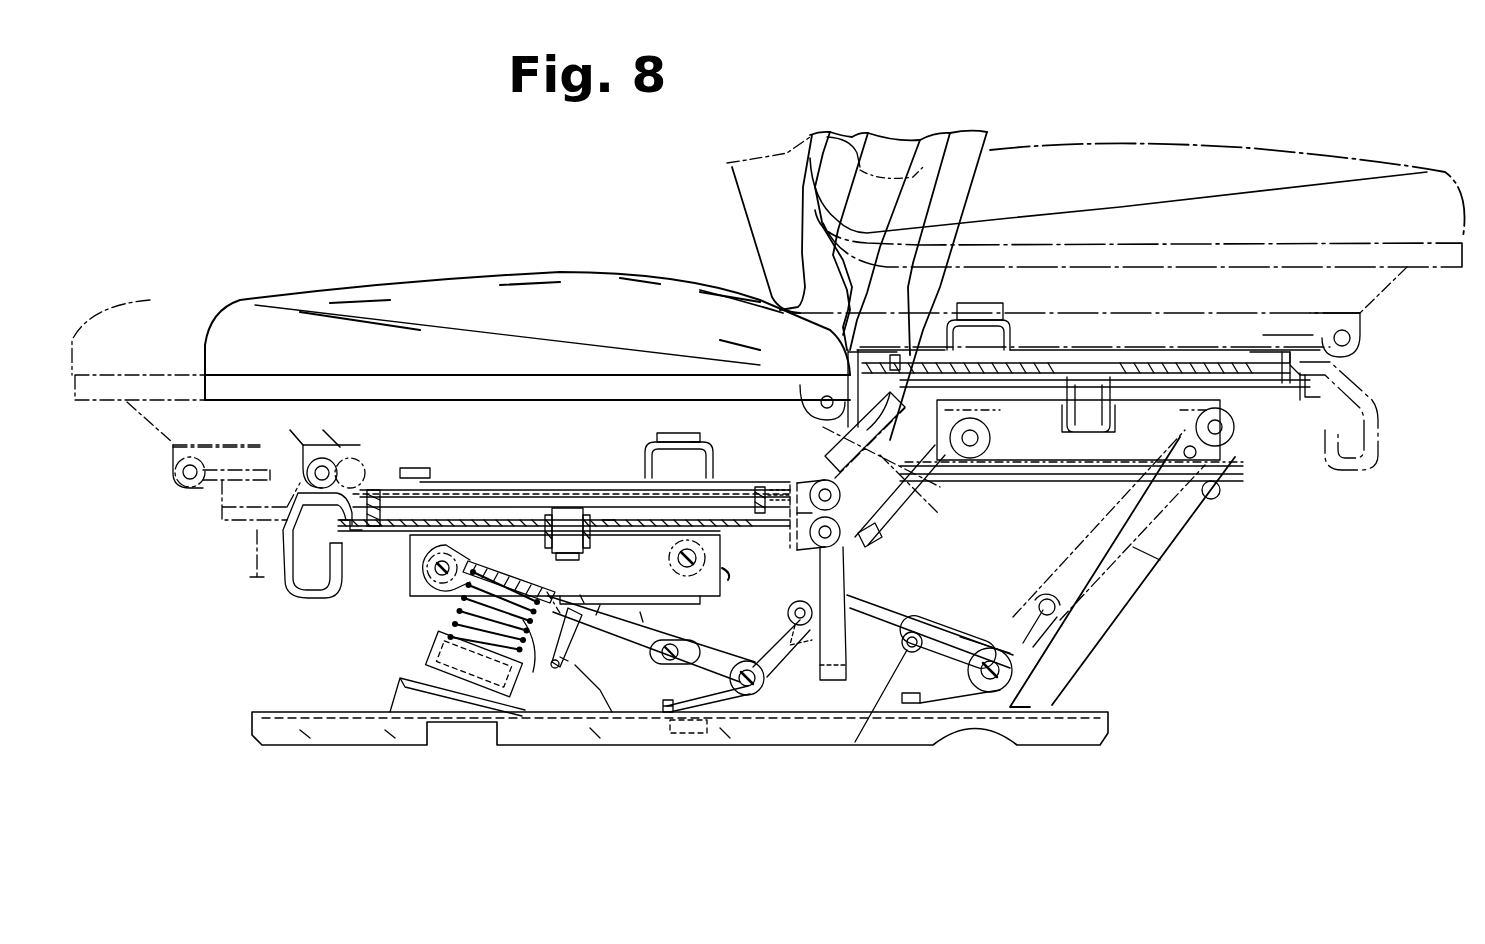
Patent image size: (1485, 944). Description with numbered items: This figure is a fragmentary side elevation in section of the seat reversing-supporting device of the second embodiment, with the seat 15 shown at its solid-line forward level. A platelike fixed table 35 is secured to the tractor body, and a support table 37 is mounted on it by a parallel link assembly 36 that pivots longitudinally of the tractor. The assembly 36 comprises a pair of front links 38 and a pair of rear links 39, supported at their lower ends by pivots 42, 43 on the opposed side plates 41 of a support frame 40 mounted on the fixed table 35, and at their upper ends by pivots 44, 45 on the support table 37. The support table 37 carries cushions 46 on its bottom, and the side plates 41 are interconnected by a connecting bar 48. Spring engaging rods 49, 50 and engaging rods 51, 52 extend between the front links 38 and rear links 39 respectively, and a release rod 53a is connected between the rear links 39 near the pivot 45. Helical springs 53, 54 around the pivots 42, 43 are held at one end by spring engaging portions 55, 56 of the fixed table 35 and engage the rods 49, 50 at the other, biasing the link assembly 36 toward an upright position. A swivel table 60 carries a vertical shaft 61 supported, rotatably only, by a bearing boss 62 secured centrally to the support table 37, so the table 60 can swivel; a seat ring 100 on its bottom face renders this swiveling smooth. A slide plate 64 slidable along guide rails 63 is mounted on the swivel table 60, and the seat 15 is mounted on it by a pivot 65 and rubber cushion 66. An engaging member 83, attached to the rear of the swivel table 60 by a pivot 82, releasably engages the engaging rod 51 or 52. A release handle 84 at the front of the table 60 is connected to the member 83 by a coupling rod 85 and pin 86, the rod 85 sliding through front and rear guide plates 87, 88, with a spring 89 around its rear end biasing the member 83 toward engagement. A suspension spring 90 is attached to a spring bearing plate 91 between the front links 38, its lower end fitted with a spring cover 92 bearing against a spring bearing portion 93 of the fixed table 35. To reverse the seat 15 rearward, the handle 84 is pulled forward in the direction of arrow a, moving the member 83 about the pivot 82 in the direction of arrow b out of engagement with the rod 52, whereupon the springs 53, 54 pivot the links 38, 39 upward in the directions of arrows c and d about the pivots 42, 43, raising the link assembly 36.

The seat 15 is at (668, 292).
The fixed table 35 is at (610, 733).
The parallel link assembly 36 is at (928, 618).
The support table 37 is at (622, 537).
The front links 38 is at (601, 647).
The rear links 39 is at (892, 617).
The support frame 40 is at (1107, 463).
The side plates 41 is at (1117, 588).
The pivot 42 is at (753, 697).
The pivot 43 is at (1014, 667).
The pivot 44 is at (433, 572).
The pivot 45 is at (673, 567).
The cushions 46 is at (453, 607).
The connecting bar 48 is at (1213, 497).
The spring engaging rod 49 is at (660, 657).
The spring engaging rod 50 is at (907, 650).
The engaging rod 51 is at (570, 685).
The engaging rod 52 is at (803, 632).
The helical spring 53 is at (723, 707).
The release rod 53a is at (727, 573).
The helical spring 54 is at (960, 700).
The spring engaging portion 55 is at (665, 712).
The spring engaging portion 56 is at (903, 705).
The swivel table 60 is at (483, 500).
The vertical shaft 61 is at (569, 520).
The bearing boss 62 is at (608, 525).
The guide rails 63 is at (400, 530).
The slide plate 64 is at (528, 480).
The pivot 65 is at (260, 527).
The rubber cushion 66 is at (700, 436).
The pivot 82 is at (887, 517).
The engaging member 83 is at (845, 645).
The release handle 84 is at (293, 592).
The coupling rod 85 is at (446, 495).
The pin 86 is at (840, 477).
The front guide plate 87 is at (343, 470).
The rear guide plate 88 is at (757, 488).
The spring 89 is at (805, 480).
The suspension spring 90 is at (553, 656).
The spring bearing plate 91 is at (487, 573).
The spring cover 92 is at (433, 662).
The spring bearing portion 93 is at (460, 697).
The seat ring 100 is at (690, 525).
The arrow a is at (258, 577).
The arrow b is at (856, 584).
The arrow c is at (705, 662).
The arrow d is at (950, 637).